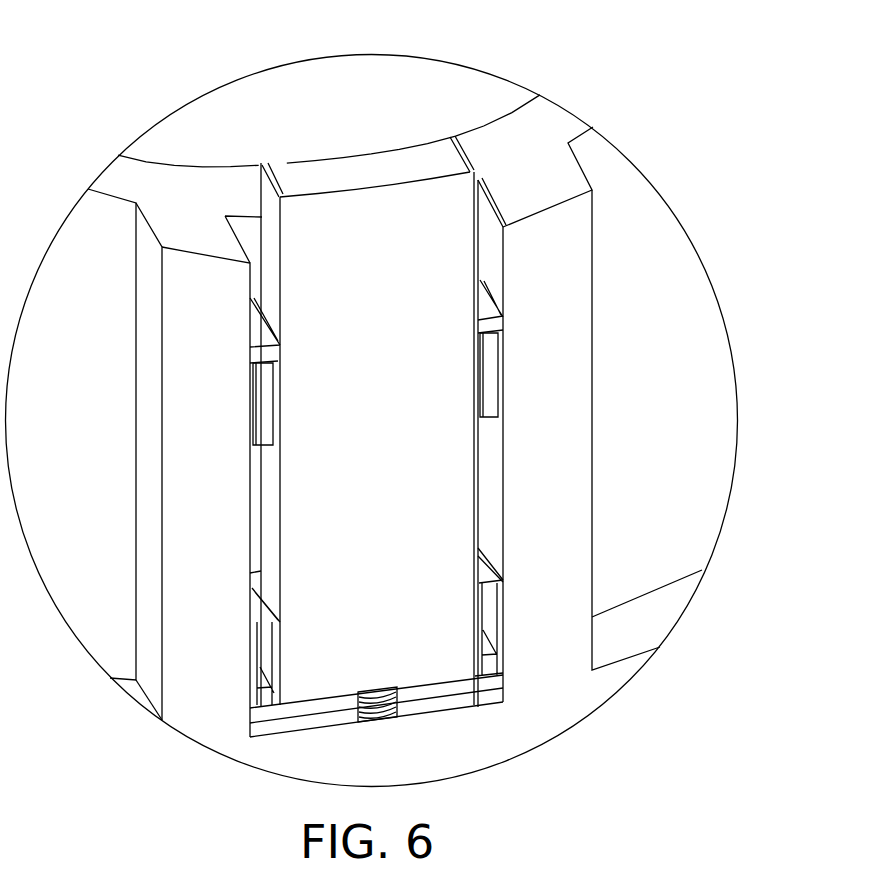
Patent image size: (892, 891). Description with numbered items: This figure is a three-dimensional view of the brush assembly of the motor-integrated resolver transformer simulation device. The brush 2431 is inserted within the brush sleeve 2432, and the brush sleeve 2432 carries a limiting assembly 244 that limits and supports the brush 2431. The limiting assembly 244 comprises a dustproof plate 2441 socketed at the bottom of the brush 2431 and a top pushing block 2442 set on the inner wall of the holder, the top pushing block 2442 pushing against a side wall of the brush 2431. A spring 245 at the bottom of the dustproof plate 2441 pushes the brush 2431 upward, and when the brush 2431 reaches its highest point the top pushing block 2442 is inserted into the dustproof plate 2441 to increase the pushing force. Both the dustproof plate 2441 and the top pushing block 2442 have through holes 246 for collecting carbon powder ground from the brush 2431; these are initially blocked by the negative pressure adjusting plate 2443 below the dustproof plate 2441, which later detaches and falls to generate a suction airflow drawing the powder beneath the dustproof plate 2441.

The limiting assembly 244 is at (96, 47).
The brush 2431 is at (400, 232).
The brush sleeve 2432 is at (557, 432).
The dustproof plate 2441 is at (250, 660).
The top pushing block 2442 is at (262, 410).
The negative pressure adjusting plate 2443 is at (296, 722).
The spring 245 is at (373, 693).
The through hole 246 is at (485, 303).